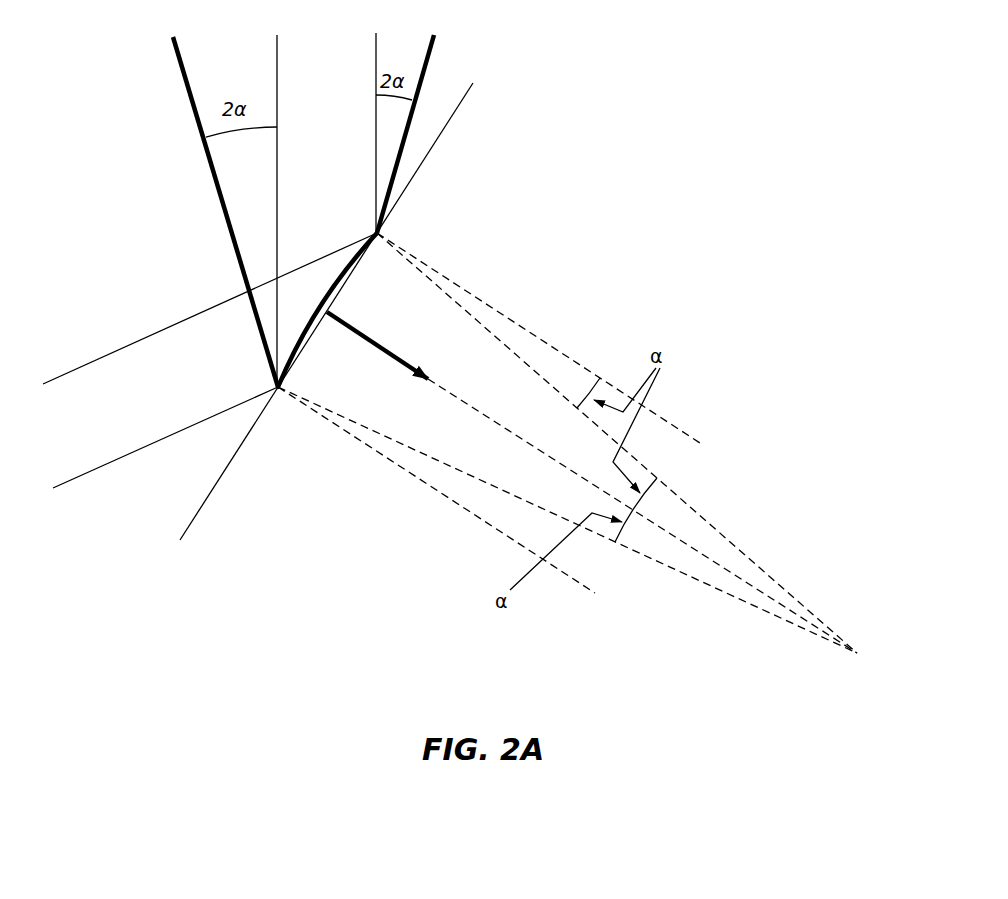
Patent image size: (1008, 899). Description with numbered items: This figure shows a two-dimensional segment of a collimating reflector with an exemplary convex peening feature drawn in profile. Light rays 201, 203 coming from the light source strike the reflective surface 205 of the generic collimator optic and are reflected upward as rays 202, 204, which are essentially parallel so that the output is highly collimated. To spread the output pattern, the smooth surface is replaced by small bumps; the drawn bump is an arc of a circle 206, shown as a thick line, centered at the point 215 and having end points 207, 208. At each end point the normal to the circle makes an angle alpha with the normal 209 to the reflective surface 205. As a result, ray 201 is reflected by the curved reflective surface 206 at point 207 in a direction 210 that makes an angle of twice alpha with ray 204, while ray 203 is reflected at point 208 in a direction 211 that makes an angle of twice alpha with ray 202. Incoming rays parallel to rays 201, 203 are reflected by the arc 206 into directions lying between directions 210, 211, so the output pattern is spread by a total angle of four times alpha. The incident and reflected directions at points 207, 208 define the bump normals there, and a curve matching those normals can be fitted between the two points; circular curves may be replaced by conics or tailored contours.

The light ray 201 is at (82, 361).
The reflected ray 202 is at (282, 67).
The light ray 203 is at (77, 486).
The reflected ray 204 is at (371, 170).
The reflective surface 205 is at (242, 461).
The arc of a circle 206 is at (240, 287).
The end point 207 is at (383, 234).
The end point 208 is at (273, 386).
The normal 209 is at (383, 339).
The reflection direction 210 is at (437, 52).
The reflection direction 211 is at (176, 72).
The center of the circle 215 is at (860, 646).